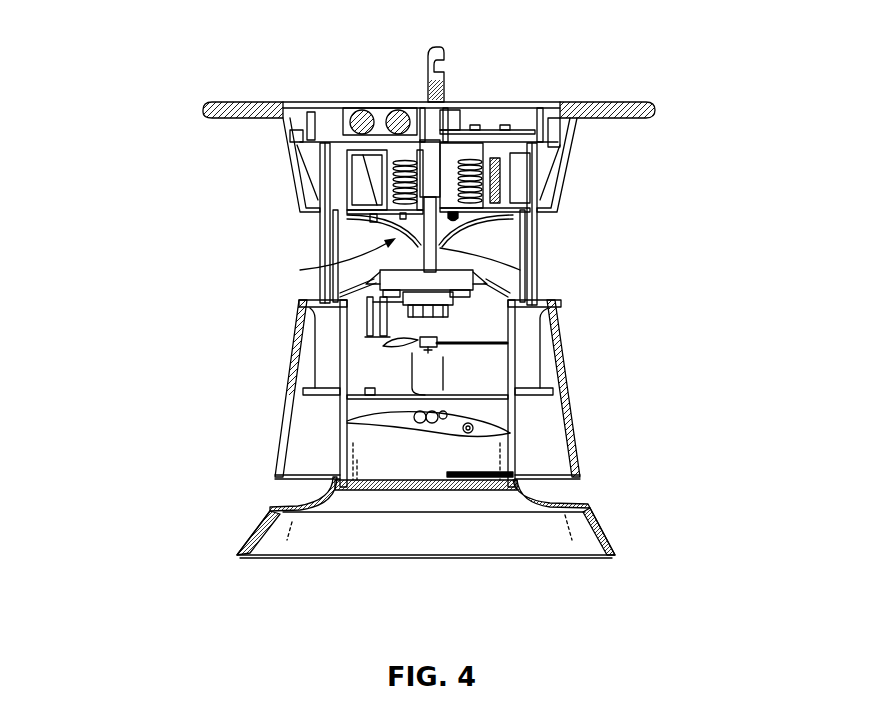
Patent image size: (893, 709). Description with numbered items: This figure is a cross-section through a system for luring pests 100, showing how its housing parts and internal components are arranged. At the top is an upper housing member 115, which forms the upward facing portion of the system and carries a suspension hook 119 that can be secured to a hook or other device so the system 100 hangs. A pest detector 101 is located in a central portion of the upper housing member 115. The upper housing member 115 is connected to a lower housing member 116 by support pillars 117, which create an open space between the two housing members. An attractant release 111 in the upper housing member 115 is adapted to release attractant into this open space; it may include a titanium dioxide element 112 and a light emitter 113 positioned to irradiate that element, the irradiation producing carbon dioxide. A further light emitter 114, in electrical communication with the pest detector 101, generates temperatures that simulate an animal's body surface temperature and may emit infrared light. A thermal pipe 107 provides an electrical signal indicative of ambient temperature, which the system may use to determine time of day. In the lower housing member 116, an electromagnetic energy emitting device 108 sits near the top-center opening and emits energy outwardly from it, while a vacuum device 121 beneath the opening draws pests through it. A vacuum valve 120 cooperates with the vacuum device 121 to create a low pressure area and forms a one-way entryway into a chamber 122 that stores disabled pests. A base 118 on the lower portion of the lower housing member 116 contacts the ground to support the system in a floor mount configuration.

The system for luring pests 100 is at (168, 80).
The pest detector 101 is at (365, 192).
The thermal pipe 107 is at (508, 196).
The electromagnetic energy emitting device 108 is at (407, 293).
The attractant release 111 is at (343, 236).
The titanium dioxide element 112 is at (477, 478).
The light emitter 113 is at (469, 435).
The light emitter 114 is at (453, 220).
The upper housing member 115 is at (660, 113).
The lower housing member 116 is at (553, 385).
The support pillar 117 is at (320, 283).
The base 118 is at (330, 556).
The suspension hook 119 is at (445, 55).
The vacuum valve 120 is at (264, 453).
The vacuum device 121 is at (423, 368).
The chamber 122 is at (353, 462).